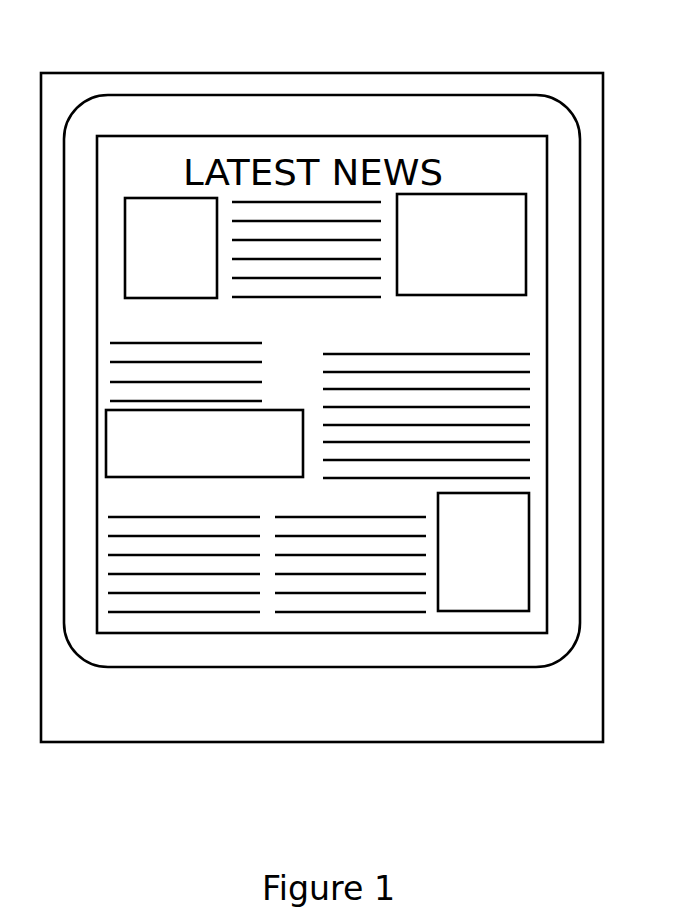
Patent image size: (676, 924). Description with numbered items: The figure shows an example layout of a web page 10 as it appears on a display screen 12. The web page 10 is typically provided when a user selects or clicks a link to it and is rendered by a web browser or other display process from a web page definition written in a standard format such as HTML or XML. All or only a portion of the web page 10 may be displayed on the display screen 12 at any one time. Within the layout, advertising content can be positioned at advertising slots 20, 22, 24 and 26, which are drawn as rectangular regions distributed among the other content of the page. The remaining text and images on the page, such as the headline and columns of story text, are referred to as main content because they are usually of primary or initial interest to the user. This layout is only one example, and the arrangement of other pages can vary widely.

The web page 10 is at (433, 93).
The display screen 12 is at (303, 717).
The advertising slot 20 is at (153, 241).
The advertising slot 22 is at (449, 237).
The advertising slot 24 is at (191, 446).
The advertising slot 26 is at (472, 537).